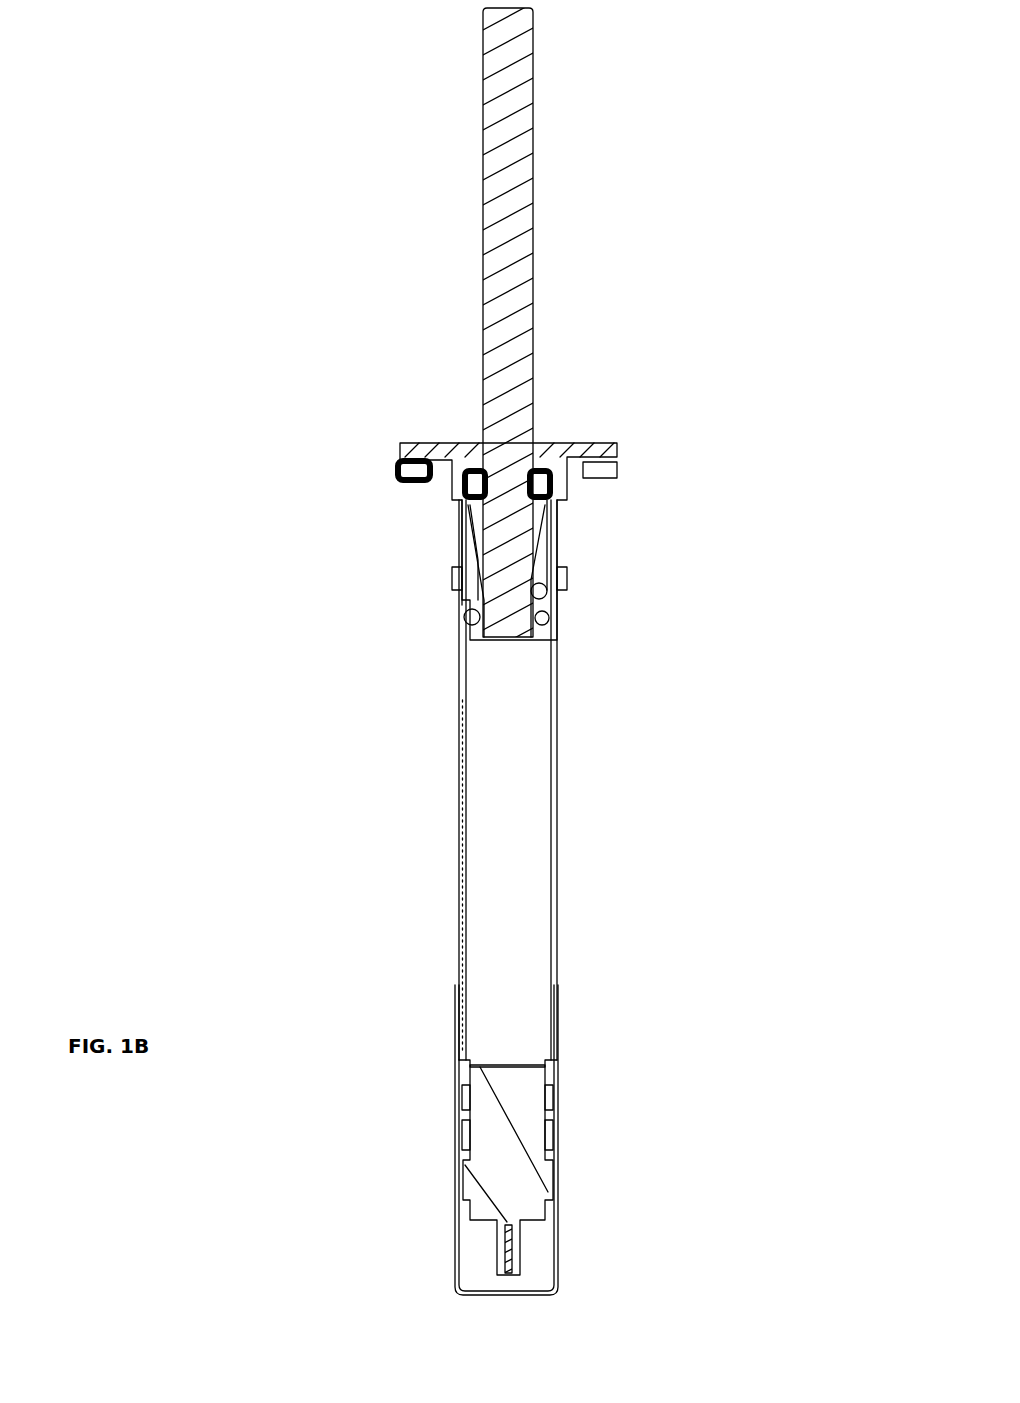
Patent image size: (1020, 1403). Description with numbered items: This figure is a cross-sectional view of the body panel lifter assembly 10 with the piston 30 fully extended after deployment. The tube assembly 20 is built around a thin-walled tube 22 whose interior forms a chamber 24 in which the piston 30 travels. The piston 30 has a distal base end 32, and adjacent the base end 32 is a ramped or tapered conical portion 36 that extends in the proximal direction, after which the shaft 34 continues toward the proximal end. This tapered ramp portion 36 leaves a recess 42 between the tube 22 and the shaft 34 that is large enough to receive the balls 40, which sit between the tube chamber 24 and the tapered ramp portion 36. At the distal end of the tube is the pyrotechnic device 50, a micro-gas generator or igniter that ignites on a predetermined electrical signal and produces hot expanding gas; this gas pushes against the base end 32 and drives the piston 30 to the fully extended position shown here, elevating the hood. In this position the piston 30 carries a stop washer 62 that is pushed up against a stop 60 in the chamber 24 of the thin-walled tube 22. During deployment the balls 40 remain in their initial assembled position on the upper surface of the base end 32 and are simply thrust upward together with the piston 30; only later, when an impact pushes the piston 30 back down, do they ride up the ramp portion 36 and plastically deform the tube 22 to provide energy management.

The body panel lifter assembly 10 is at (183, 403).
The tube assembly 20 is at (466, 692).
The thin-walled tube 22 is at (468, 733).
The chamber 24 is at (497, 818).
The piston 30 is at (492, 512).
The base end 32 is at (472, 626).
The shaft 34 is at (500, 215).
The tapered ramp portion 36 is at (518, 563).
The balls 40 is at (548, 595).
The recess 42 is at (476, 580).
The pyrotechnic device 50 is at (480, 1107).
The stop 60 is at (477, 452).
The stop washer 62 is at (423, 453).